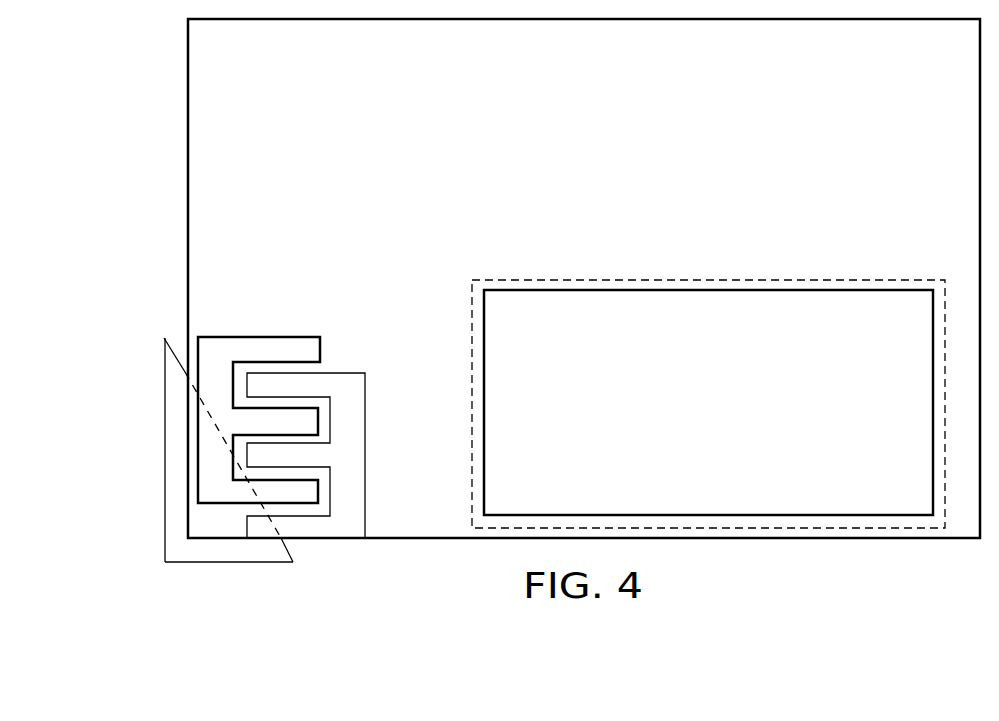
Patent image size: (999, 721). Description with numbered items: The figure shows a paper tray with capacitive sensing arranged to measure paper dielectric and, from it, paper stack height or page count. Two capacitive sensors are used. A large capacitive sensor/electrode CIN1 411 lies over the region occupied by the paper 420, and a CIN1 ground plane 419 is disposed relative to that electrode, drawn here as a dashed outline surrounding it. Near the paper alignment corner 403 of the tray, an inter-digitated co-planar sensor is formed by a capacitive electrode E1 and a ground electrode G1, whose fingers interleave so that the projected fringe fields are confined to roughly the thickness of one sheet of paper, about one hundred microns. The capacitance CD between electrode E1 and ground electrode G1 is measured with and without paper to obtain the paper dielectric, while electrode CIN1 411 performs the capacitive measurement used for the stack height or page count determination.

The paper alignment corner 403 is at (183, 540).
The capacitive sensor/electrode CIN1 411 is at (728, 436).
The CIN1 ground plane 419 is at (827, 285).
The paper 420 is at (607, 186).
The capacitive electrode E1 is at (260, 338).
The ground electrode G1 is at (358, 455).